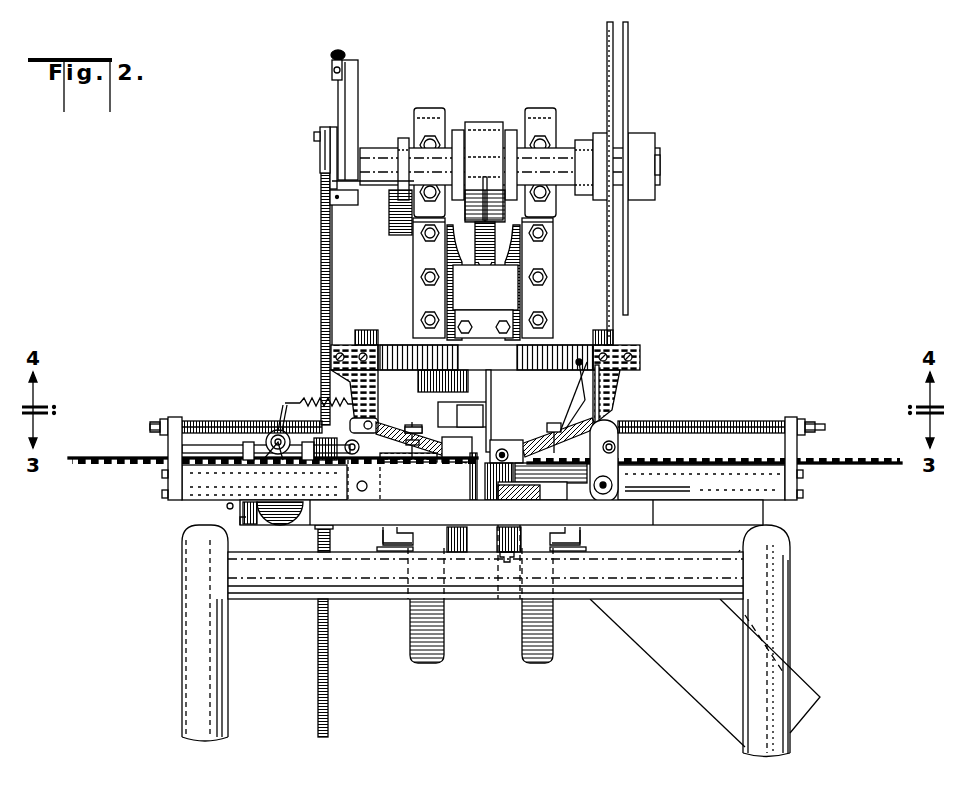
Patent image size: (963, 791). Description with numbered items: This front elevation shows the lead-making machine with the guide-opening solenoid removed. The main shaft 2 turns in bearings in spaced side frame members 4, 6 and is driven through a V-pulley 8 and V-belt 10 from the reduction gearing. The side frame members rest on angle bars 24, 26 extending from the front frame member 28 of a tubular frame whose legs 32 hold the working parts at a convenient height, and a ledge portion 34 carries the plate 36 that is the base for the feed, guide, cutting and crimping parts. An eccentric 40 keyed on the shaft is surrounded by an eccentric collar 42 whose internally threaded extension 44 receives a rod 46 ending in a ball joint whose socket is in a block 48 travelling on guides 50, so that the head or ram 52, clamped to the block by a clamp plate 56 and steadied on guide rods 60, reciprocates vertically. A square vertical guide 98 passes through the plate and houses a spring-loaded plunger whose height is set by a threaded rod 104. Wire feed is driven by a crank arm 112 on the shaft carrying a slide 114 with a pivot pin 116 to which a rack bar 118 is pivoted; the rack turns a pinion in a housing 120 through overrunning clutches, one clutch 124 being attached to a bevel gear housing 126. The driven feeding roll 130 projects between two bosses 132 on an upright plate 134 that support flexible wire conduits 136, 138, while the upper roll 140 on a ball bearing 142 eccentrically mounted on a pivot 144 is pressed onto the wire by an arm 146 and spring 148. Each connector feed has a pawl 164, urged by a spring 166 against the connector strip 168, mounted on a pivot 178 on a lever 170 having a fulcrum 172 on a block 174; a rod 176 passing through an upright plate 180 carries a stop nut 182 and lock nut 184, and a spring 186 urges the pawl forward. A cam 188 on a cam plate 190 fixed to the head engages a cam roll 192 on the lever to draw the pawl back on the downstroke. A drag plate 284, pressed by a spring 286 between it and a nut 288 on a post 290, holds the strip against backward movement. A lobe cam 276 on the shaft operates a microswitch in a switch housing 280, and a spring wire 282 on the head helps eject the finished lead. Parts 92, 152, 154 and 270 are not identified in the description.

The main shaft 2 is at (563, 160).
The side frame member 4 is at (546, 108).
The side frame member 6 is at (427, 108).
The V-pulley 8 is at (628, 100).
The V-belt 10 is at (614, 28).
The angle bar 24 is at (575, 553).
The angle bar 26 is at (392, 553).
The front frame member 28 is at (266, 578).
The legs 32 is at (190, 709).
The ledge portion 34 is at (382, 535).
The plate 36 is at (653, 517).
The eccentric 40 is at (458, 130).
The eccentric collar 42 is at (482, 123).
The internally threaded extension 44 is at (495, 212).
The rod 46 is at (490, 266).
The block 48 is at (512, 277).
The guides 50 is at (447, 250).
The head or ram 52 is at (414, 355).
The clamp plate 56 is at (498, 317).
The guide rods 60 is at (370, 332).
The bar 92 is at (481, 360).
The vertical guide 98 is at (500, 521).
The rod 104 is at (500, 588).
The crank arm 112 is at (357, 78).
The slide 114 is at (332, 128).
The crank pin or pivot pin 116 is at (314, 137).
The rack bar 118 is at (321, 255).
The housing 120 is at (320, 540).
The overrunning clutch 124 is at (227, 507).
The bevel gear housing 126 is at (246, 524).
The wire feeding roll 130 is at (284, 512).
The bosses 132 is at (285, 469).
The upright plate 134 is at (243, 444).
The flexible wire conduit 136 is at (215, 468).
The flexible wire conduit 138 is at (408, 477).
The upper roll 140 is at (268, 433).
The ball bearing 142 is at (296, 468).
The pivot 144 is at (264, 468).
The arm 146 is at (283, 405).
The spring 148 is at (300, 400).
The screw 152 is at (332, 74).
The knob 154 is at (333, 52).
The pawl 164 is at (460, 462).
The spring 166 is at (384, 477).
The connector strip 168 is at (92, 466).
The lever 170 is at (380, 502).
The fulcrum 172 is at (361, 494).
The block 174 is at (194, 494).
The rod 176 is at (150, 428).
The pivot 178 is at (410, 426).
The upright plate 180 is at (168, 483).
The stop nut 182 is at (163, 419).
The lock nut 184 is at (158, 425).
The spring 186 is at (201, 421).
The cam 188 is at (617, 447).
The cam plate 190 is at (352, 352).
The cam roll 192 is at (670, 480).
The block 270 is at (522, 500).
The lobe cam 276 is at (400, 138).
The switch housing 280 is at (389, 222).
The spring wire 282 is at (583, 397).
The drag plate 284 is at (579, 359).
The spring 286 is at (420, 430).
The nut 288 is at (425, 395).
The post 290 is at (415, 432).